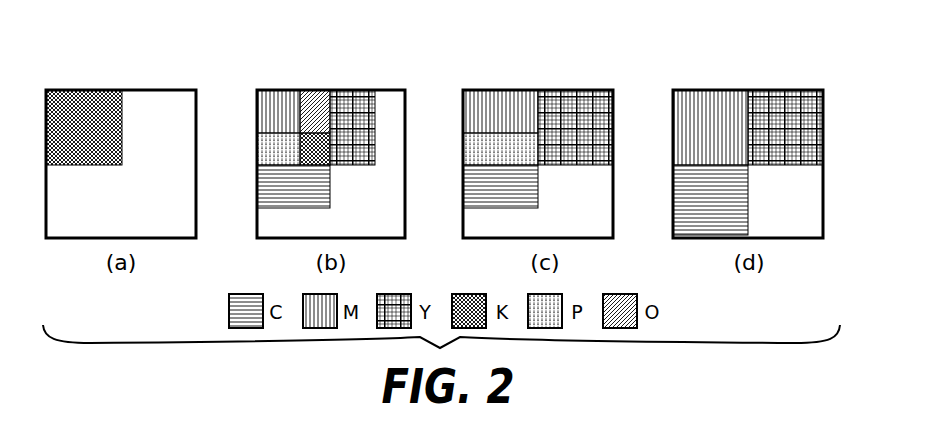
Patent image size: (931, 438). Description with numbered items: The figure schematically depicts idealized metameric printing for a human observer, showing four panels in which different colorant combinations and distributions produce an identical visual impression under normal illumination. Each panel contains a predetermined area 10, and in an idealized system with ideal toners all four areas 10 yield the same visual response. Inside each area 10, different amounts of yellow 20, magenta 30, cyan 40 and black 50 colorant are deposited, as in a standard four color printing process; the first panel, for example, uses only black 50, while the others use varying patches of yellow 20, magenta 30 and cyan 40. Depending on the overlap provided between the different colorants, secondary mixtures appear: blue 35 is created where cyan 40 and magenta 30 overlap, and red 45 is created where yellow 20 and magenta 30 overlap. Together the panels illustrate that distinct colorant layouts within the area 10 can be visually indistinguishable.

The area 10 is at (174, 238).
The yellow colorant 20 is at (362, 100).
The magenta colorant 30 is at (272, 100).
The blue mixture 35 is at (273, 145).
The cyan colorant 40 is at (323, 188).
The red mixture 45 is at (312, 93).
The black colorant 50 is at (97, 90).